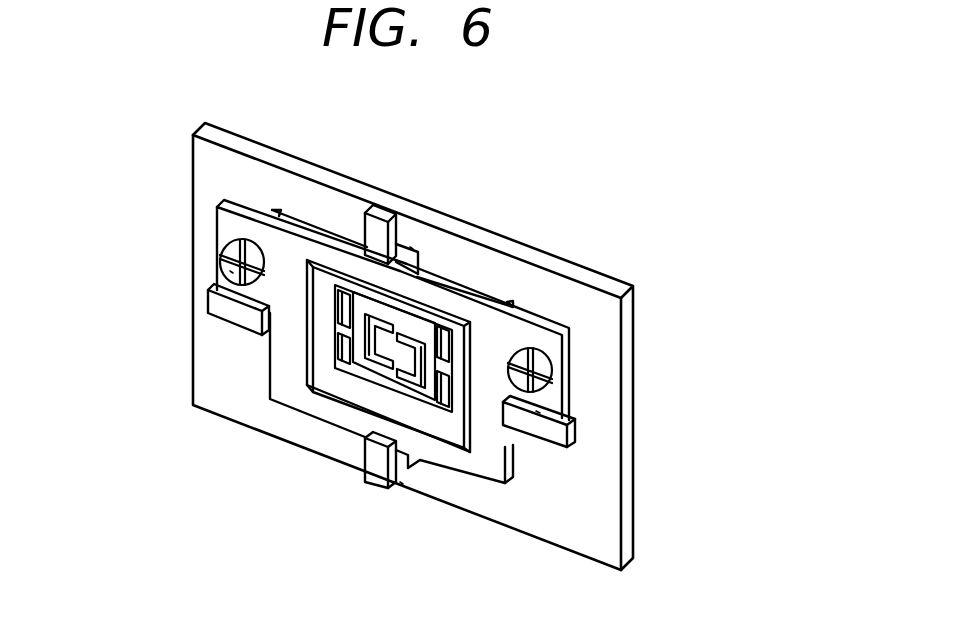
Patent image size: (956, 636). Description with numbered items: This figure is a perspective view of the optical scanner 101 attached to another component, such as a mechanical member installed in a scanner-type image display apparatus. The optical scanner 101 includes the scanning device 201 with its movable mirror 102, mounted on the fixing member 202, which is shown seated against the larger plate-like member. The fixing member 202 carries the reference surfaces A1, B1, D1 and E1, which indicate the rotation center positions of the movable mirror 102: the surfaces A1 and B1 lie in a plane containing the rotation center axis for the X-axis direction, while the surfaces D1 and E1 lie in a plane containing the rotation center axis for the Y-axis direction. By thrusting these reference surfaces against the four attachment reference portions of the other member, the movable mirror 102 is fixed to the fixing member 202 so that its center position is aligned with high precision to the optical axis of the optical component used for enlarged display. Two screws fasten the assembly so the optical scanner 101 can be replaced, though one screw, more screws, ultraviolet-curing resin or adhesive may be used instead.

The optical scanner 101 is at (632, 252).
The movable mirror 102 is at (397, 348).
The scanning device 201 is at (323, 365).
The fixing member 202 is at (487, 458).
The reference surface A1 is at (538, 412).
The reference surface B1 is at (231, 272).
The reference surface D1 is at (402, 483).
The reference surface E1 is at (412, 248).